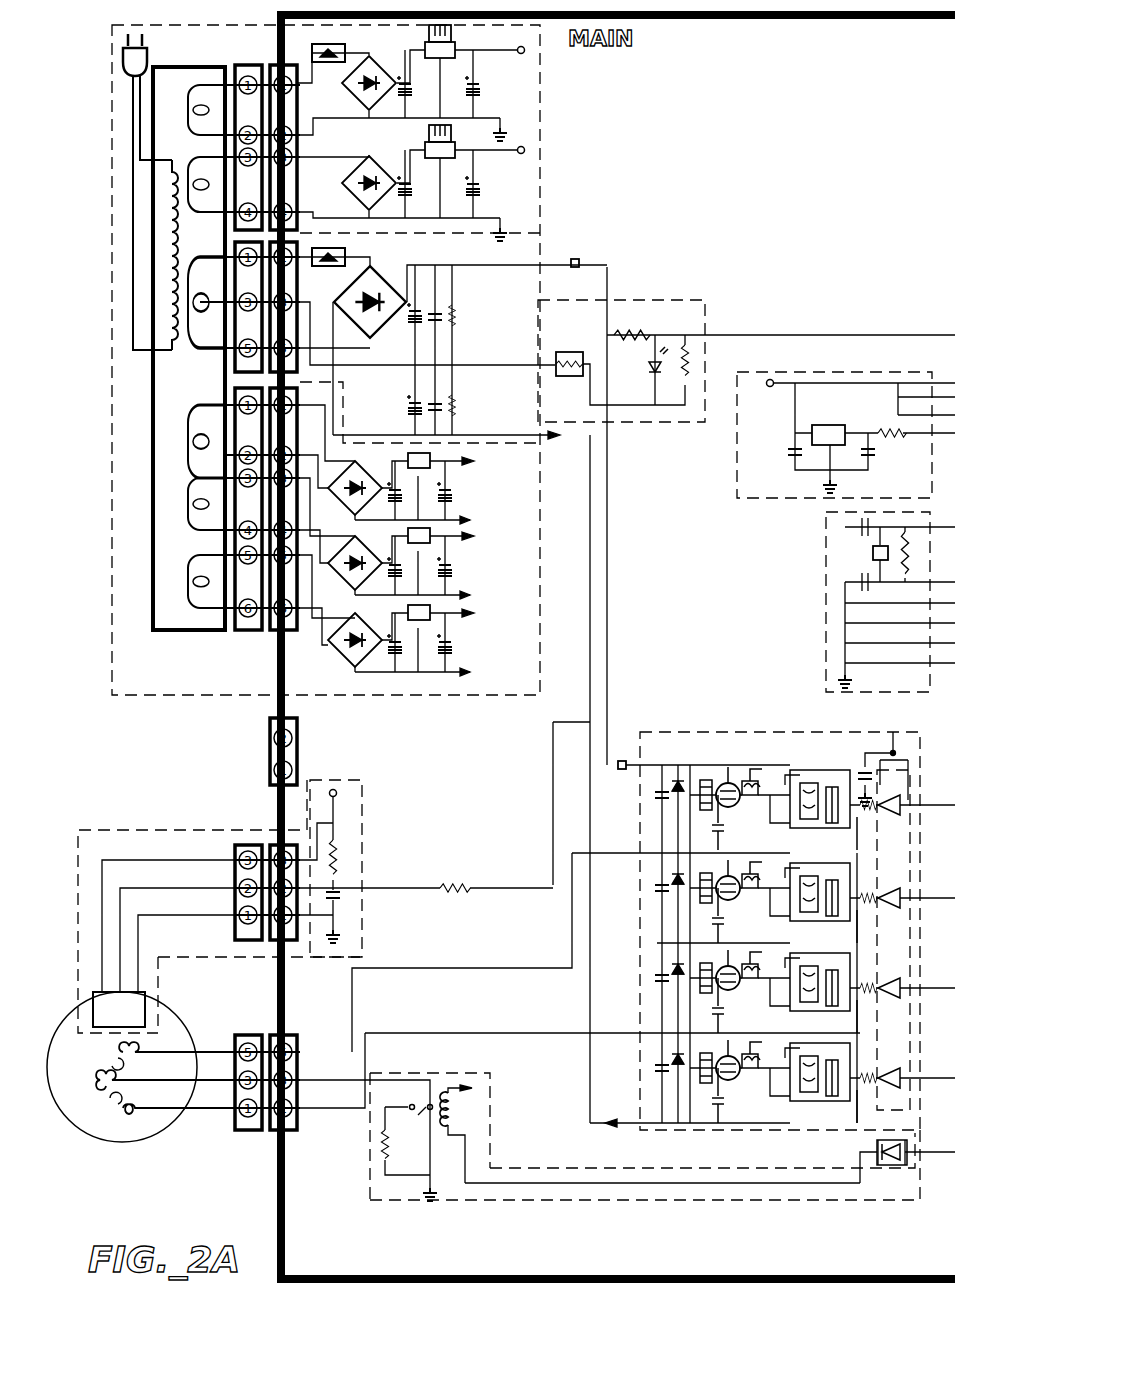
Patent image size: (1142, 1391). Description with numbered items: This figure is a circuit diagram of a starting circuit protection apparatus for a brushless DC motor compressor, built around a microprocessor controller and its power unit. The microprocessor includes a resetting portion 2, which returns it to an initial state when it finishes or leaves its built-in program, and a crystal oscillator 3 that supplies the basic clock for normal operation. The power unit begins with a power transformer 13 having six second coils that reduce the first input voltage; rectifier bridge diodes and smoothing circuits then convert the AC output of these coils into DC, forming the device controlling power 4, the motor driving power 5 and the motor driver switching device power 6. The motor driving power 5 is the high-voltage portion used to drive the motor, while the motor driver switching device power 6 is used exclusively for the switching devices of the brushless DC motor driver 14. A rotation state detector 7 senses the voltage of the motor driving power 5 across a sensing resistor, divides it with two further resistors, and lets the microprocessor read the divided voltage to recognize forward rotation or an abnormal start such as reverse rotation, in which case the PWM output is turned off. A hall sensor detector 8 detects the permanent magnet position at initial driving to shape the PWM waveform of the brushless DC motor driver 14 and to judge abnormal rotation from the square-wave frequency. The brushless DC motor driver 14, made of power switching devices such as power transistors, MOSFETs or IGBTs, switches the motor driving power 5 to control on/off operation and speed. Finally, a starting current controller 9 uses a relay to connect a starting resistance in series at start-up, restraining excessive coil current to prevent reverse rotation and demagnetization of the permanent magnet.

The resetting portion 2 is at (746, 499).
The crystal oscillator 3 is at (826, 604).
The device controlling power 4 is at (540, 140).
The motor driving power 5 is at (540, 248).
The motor driver switching device power 6 is at (430, 698).
The rotation state detector 7 is at (640, 300).
The hall sensor detector 8 is at (360, 822).
The starting current controller 9 is at (490, 1120).
The power transformer 13 is at (192, 698).
The brushless DC motor driver 14 is at (773, 732).